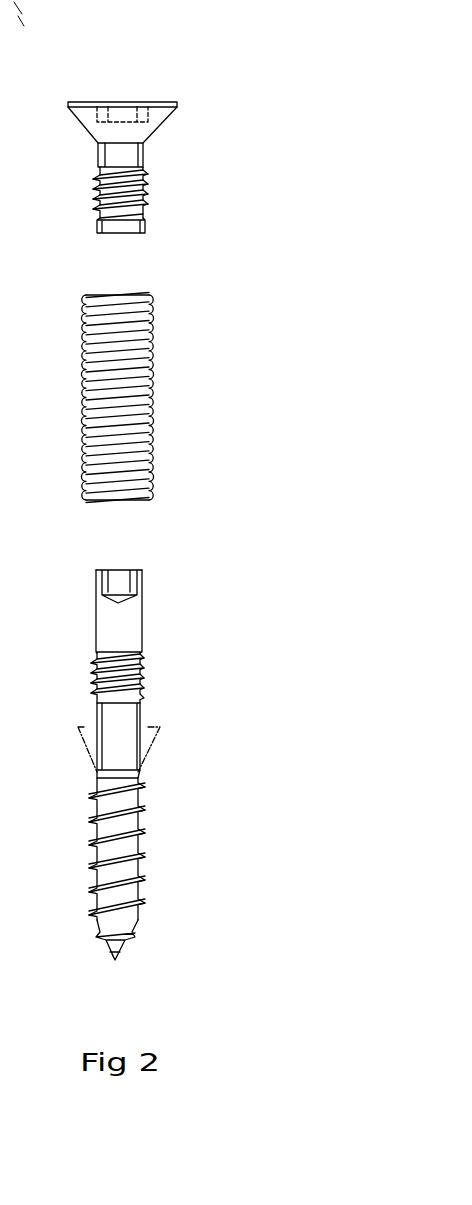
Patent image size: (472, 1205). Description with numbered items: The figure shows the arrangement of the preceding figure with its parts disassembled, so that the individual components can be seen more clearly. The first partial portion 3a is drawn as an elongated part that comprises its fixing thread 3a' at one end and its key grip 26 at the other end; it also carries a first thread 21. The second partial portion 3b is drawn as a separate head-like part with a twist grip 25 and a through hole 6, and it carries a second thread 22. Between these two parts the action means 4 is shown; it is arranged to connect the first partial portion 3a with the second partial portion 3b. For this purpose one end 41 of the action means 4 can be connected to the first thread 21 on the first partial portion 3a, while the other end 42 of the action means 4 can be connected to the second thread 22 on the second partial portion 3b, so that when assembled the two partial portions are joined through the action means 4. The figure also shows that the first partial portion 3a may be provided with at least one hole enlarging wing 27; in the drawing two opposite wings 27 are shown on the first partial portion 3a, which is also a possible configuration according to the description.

The first partial portion 3a is at (164, 674).
The fixing thread 3a' is at (159, 869).
The second partial portion 3b is at (145, 160).
The action means 4 is at (180, 403).
The through hole 6 is at (115, 158).
The first thread 21 is at (142, 673).
The second thread 22 is at (143, 207).
The twist grip 25 is at (135, 112).
The key grip 26 is at (128, 590).
The hole enlarging wing 27 is at (148, 740).
The one end of the action means 41 is at (152, 493).
The other end of the action means 42 is at (152, 303).